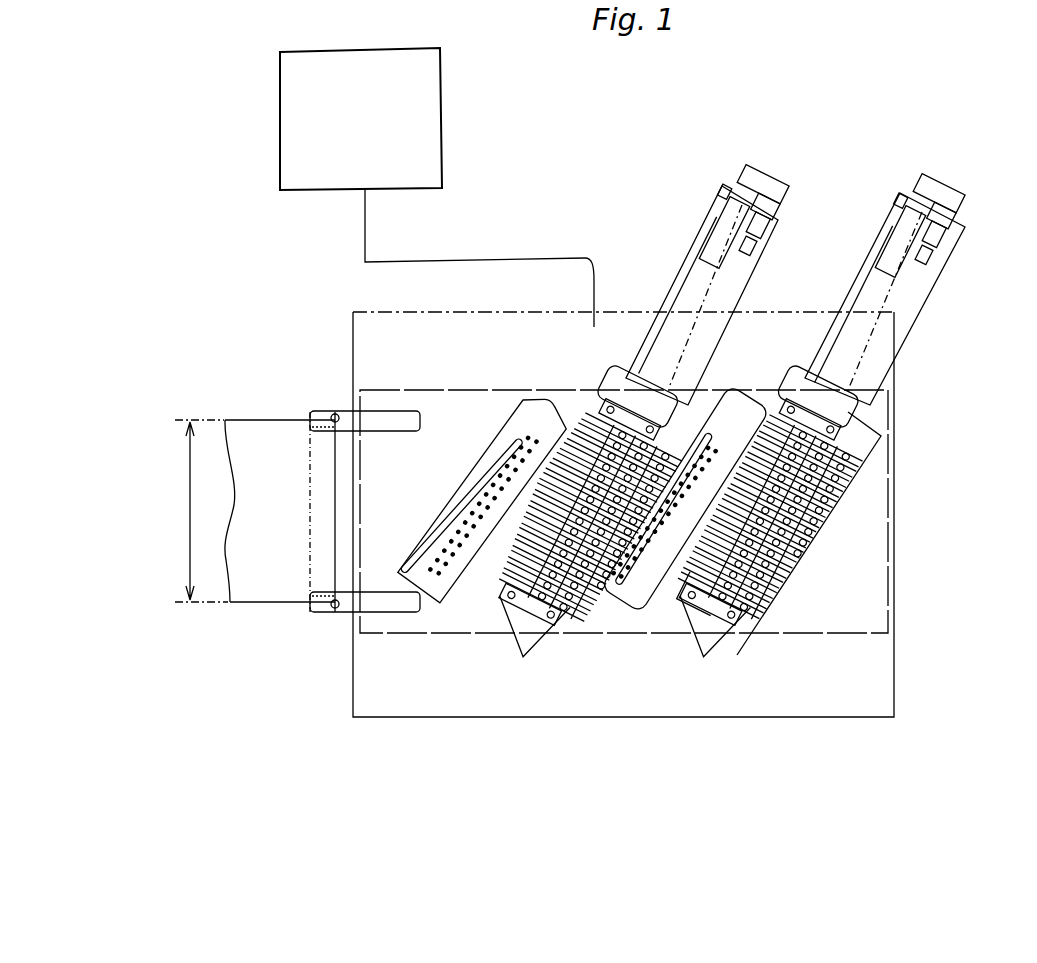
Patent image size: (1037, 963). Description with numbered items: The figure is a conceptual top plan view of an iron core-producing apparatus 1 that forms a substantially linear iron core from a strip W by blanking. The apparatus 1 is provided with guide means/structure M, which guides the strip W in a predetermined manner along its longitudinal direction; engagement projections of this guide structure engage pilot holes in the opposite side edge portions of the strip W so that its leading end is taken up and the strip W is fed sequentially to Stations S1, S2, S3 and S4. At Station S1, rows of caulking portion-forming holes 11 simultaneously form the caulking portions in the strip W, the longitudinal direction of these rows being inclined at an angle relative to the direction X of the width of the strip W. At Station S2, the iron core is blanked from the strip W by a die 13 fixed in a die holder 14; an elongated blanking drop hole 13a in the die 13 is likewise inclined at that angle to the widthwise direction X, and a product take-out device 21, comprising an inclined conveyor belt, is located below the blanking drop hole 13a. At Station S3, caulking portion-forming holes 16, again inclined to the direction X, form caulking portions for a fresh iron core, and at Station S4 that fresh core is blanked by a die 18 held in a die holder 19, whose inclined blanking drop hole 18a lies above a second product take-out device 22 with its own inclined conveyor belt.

The iron core-producing apparatus 1 is at (468, 243).
The caulking portion-forming holes 11 is at (468, 505).
The die 13 is at (470, 597).
The blanking drop hole 13a is at (497, 592).
The die holder 14 is at (463, 585).
The caulking portion-forming holes 16 is at (736, 434).
The die 18 is at (853, 442).
The blanking drop hole 18a is at (687, 612).
The die holder 19 is at (717, 633).
The product take-out device 21 is at (693, 287).
The product take-out device 22 is at (890, 297).
The strip W is at (262, 445).
The direction of the width of the strip X is at (190, 532).
The Station S1 is at (443, 539).
The Station S2 is at (541, 616).
The Station S3 is at (697, 534).
The Station S4 is at (800, 605).
The guide means/structure M is at (437, 187).